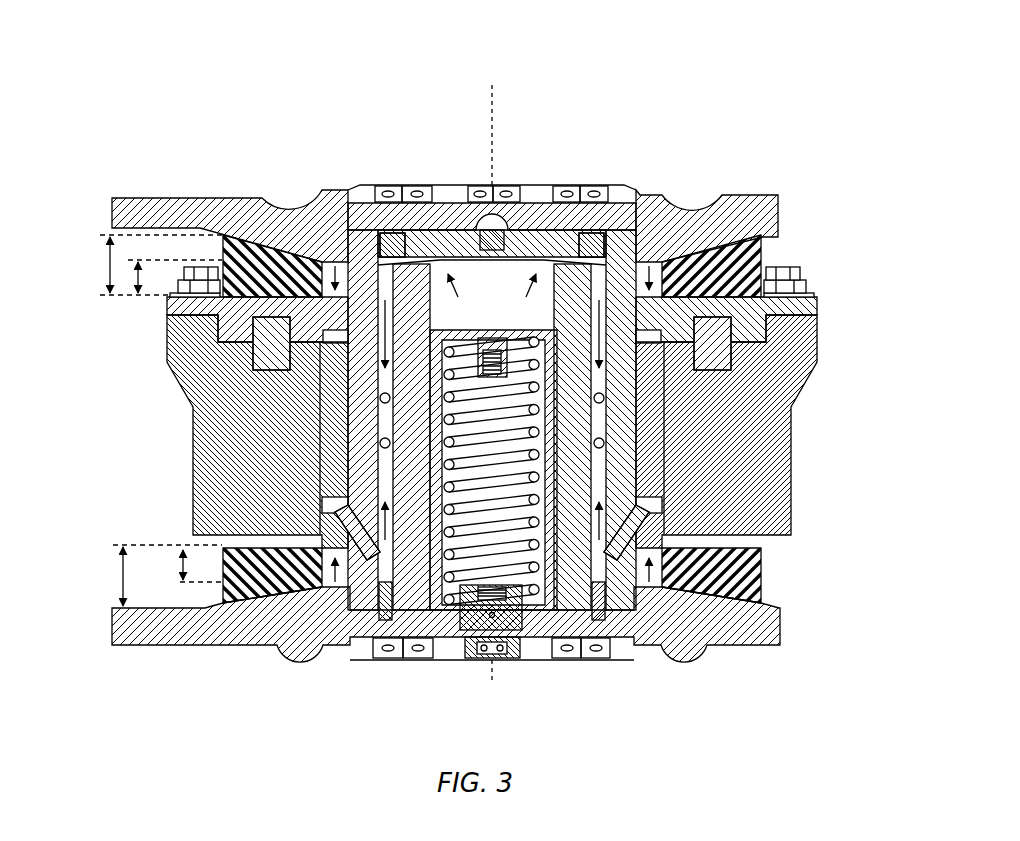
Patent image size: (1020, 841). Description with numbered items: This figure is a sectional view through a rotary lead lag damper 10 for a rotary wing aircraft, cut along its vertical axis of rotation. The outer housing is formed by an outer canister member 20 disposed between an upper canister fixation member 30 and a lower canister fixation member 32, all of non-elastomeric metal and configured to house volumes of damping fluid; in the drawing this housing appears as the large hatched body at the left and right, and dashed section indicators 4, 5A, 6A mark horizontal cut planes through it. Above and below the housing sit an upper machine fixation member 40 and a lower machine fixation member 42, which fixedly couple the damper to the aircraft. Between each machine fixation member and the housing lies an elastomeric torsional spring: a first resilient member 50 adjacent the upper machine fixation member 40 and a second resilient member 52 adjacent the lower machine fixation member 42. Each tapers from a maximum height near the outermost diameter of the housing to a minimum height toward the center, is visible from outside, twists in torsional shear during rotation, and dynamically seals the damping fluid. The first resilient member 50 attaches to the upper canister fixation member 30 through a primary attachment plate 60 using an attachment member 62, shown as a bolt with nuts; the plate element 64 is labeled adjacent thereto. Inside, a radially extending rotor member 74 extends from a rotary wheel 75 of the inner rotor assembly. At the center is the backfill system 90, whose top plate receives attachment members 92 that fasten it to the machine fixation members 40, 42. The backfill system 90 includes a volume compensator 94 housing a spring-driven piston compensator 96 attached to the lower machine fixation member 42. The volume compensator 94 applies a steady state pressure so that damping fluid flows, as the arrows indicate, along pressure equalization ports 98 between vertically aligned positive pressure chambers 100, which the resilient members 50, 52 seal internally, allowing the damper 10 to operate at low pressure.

The rotary damper 10 is at (283, 46).
The upper machine fixation member 40 is at (147, 205).
The lower machine fixation member 42 is at (258, 602).
The first resilient member 50 is at (265, 255).
The second resilient member 52 is at (300, 585).
The primary attachment plate 60 is at (815, 312).
The attachment member 62 is at (198, 270).
The washer plate 64 is at (170, 305).
The radially extending rotor member 74 is at (205, 642).
The rotary wheel 75 is at (315, 586).
The backfill system 90 is at (606, 198).
The attachment member 92 is at (383, 188).
The volume compensator 94 is at (482, 286).
The spring-driven piston compensator 96 is at (476, 555).
The pressure equalization port 98 is at (366, 542).
The positive pressure chamber 100 is at (328, 270).
The outer canister member 20 is at (483, 420).
The upper canister fixation member 30 is at (483, 420).
The lower canister fixation member 32 is at (193, 362).
The section line 4 is at (873, 415).
The section line 5A is at (851, 437).
The section line 6A is at (828, 475).